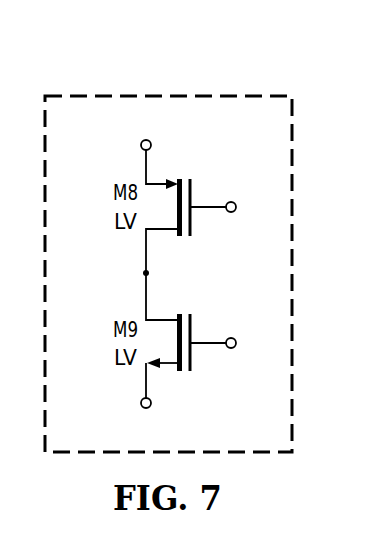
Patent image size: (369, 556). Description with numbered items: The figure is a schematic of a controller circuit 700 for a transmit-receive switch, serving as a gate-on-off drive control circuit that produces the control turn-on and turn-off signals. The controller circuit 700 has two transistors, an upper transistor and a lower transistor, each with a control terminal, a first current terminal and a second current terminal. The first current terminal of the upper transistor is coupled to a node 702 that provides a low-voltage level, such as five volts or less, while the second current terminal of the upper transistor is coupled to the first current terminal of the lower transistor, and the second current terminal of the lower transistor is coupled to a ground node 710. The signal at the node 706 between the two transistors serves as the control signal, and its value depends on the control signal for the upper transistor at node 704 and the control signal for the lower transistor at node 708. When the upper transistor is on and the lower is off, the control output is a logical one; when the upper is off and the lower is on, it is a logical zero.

The controller circuit 700 is at (208, 62).
The node 702 is at (140, 143).
The node 704 is at (232, 200).
The node 706 is at (141, 273).
The node 708 is at (231, 349).
The ground node 710 is at (140, 406).